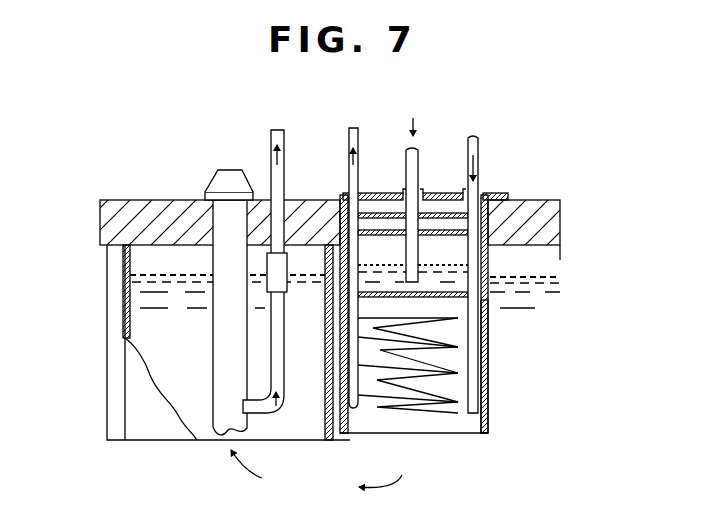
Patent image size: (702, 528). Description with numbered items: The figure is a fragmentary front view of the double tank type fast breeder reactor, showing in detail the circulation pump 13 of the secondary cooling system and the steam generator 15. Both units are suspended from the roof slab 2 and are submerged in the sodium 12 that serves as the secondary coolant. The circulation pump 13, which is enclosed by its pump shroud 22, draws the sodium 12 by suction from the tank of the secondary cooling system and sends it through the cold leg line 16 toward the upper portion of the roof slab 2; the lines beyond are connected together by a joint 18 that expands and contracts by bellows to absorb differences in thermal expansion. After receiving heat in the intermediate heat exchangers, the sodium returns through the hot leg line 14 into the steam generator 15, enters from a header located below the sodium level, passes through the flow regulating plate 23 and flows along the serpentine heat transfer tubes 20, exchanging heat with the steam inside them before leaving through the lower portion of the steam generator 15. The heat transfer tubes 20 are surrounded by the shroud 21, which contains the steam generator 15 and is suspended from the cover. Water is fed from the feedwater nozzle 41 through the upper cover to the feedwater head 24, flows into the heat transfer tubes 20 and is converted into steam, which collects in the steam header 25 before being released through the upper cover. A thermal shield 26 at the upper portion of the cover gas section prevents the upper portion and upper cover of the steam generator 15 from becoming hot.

The roof slab 2 is at (557, 198).
The sodium 12 is at (393, 491).
The circulation pump of the secondary cooling system 13 is at (213, 175).
The hot leg line 14 is at (417, 150).
The steam generator 15 is at (437, 192).
The cold leg line 16 is at (284, 166).
The joint 18 is at (288, 283).
The heat transfer tube 20 is at (450, 417).
The shroud 21 is at (488, 342).
The pump shroud 22 is at (152, 430).
The flow regulating plate 23 is at (380, 292).
The feedwater head 24 is at (478, 417).
The steam header 25 is at (345, 418).
The thermal shield 26 is at (378, 213).
The feedwater nozzle 41 is at (478, 143).